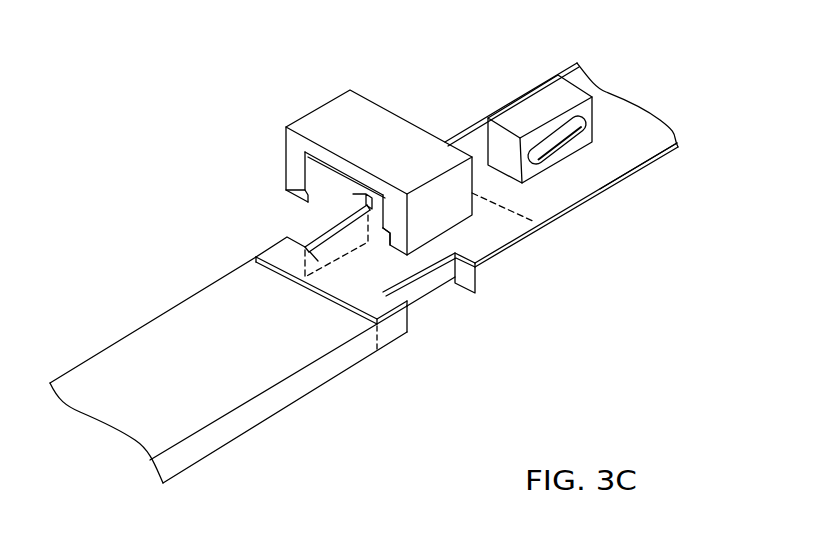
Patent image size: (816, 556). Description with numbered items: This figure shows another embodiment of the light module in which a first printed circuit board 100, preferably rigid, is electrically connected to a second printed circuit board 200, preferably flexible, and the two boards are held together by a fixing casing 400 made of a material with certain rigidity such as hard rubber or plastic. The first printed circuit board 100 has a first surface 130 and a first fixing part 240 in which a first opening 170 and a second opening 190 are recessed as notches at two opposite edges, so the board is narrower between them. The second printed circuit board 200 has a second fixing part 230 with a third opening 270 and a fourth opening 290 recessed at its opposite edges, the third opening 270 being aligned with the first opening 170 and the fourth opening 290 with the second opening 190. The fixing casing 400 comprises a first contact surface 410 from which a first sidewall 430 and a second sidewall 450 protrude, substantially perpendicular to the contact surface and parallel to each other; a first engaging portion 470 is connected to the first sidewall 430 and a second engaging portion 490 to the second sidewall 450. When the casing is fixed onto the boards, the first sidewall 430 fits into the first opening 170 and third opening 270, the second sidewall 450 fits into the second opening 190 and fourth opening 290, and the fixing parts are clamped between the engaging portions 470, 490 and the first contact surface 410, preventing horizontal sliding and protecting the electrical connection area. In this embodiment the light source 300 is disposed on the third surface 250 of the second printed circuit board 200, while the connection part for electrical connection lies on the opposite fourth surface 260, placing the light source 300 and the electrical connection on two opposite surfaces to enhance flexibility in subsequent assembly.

The first printed circuit board 100 is at (271, 400).
The first surface 130 is at (142, 365).
The first opening 170 is at (420, 298).
The second opening 190 is at (307, 243).
The second printed circuit board 200 is at (443, 247).
The second fixing part 230 is at (338, 280).
The first fixing part 240 is at (392, 333).
The third surface 250 is at (573, 77).
The fourth surface 260 is at (645, 168).
The third opening 270 is at (452, 272).
The fourth opening 290 is at (323, 225).
The light source 300 is at (518, 120).
The fixing casing 400 is at (359, 242).
The first contact surface 410 is at (297, 162).
The first sidewall 430 is at (400, 215).
The second sidewall 450 is at (293, 160).
The first engaging portion 470 is at (380, 233).
The second engaging portion 490 is at (300, 198).